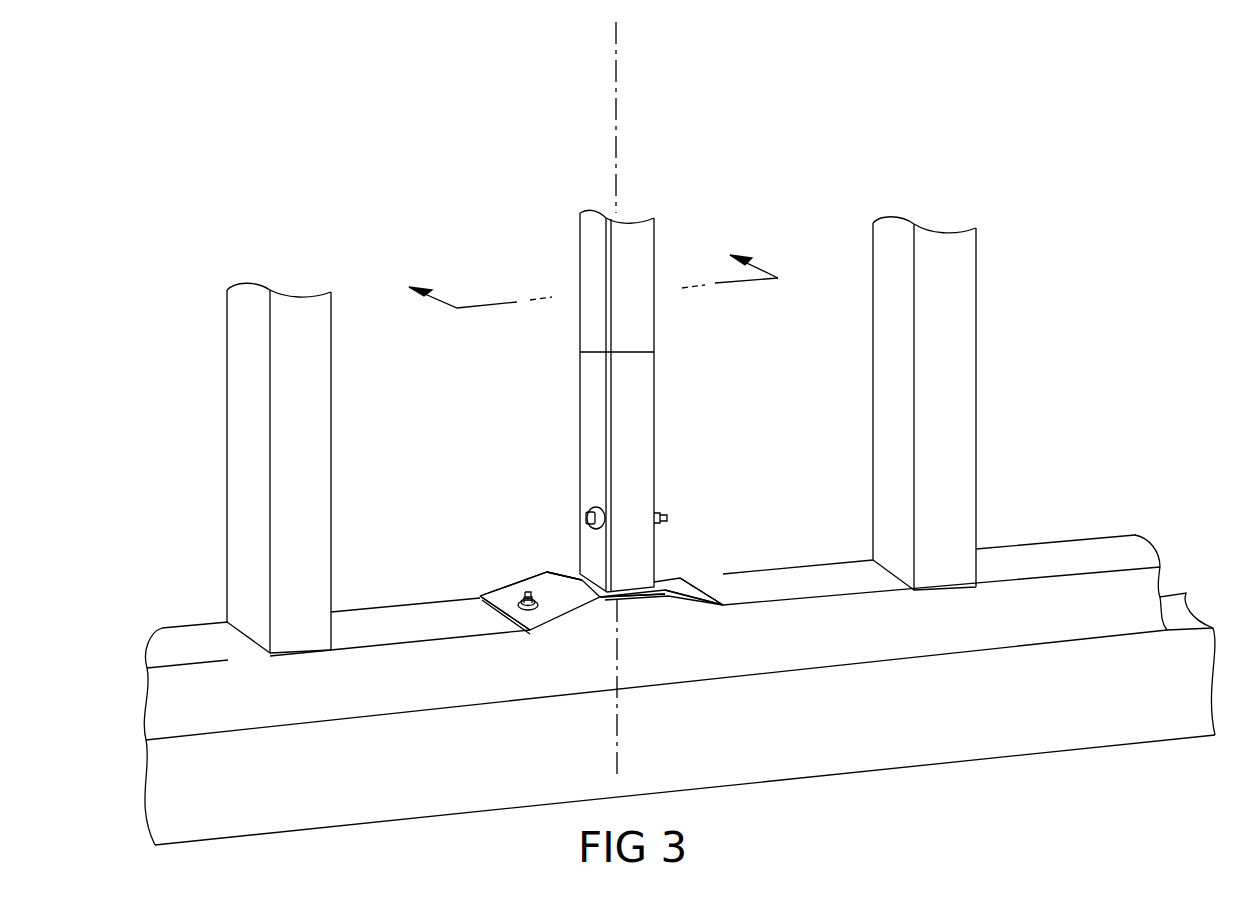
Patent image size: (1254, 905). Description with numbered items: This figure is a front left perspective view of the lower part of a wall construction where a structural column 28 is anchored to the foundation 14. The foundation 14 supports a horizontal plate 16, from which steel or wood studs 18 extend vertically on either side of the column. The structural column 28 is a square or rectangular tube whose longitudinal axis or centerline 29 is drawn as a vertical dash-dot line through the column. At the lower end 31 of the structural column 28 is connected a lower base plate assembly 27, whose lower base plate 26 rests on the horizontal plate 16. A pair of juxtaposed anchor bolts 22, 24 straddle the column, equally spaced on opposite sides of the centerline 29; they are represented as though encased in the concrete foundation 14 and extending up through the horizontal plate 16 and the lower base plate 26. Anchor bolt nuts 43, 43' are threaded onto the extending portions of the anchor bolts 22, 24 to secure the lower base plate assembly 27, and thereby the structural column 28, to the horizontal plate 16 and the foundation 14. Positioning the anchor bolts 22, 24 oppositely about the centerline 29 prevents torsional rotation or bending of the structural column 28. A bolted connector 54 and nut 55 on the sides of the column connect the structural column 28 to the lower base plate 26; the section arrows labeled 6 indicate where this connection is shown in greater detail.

The foundation 14 is at (1102, 720).
The horizontal plate 16 is at (1060, 556).
The studs 18 is at (317, 366).
The anchor bolt 22 is at (527, 596).
The anchor bolt 24 is at (672, 580).
The lower base plate 26 is at (637, 607).
The lower base plate assembly 27 is at (697, 515).
The structural column 28 is at (588, 422).
The centerline 29 is at (616, 162).
The lower end 31 is at (593, 568).
The anchor bolt nut 43 is at (541, 664).
The anchor bolt nut 43' is at (708, 573).
The bolted connector 54 is at (584, 516).
The nut 55 is at (657, 510).
The section line 6 is at (593, 263).